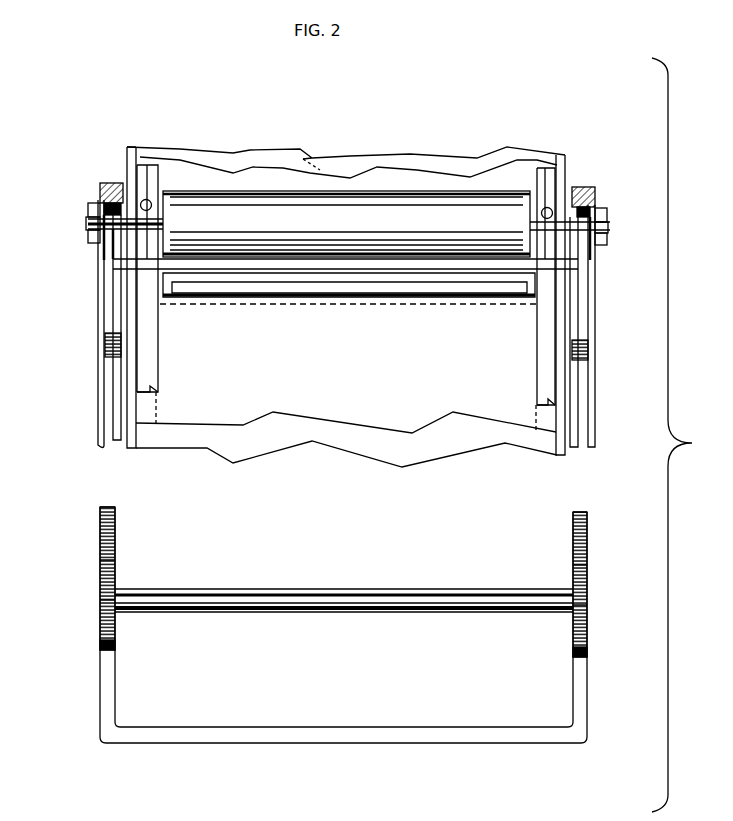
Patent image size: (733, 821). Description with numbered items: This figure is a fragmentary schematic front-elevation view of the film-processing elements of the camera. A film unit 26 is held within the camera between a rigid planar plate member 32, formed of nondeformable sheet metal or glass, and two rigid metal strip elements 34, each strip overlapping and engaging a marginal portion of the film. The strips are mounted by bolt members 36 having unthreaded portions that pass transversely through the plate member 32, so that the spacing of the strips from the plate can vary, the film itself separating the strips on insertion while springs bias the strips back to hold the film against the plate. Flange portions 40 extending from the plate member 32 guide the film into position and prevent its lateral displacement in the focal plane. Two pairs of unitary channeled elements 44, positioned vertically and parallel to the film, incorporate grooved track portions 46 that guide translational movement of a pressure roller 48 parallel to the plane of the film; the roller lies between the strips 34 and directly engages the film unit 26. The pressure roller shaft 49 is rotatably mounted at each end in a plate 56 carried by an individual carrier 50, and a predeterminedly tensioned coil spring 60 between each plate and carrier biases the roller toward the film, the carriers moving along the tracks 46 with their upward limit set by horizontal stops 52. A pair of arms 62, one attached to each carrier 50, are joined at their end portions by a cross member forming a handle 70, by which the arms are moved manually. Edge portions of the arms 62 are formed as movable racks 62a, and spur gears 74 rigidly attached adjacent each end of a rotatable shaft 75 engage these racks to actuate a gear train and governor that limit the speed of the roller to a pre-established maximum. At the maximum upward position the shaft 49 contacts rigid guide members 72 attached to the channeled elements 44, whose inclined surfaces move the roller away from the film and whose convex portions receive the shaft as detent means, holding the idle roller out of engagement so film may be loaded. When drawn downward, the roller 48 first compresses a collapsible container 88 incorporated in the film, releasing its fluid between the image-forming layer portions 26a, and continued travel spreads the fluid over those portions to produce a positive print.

The film unit 26 is at (311, 178).
The image-forming layer portions 26a is at (367, 369).
The rigid planar plate member 32 is at (264, 152).
The metal strip elements 34 is at (150, 352).
The bolt members 36 is at (146, 199).
The flange portions 40 is at (127, 412).
The channeled elements 44 is at (107, 372).
The grooved track portions 46 is at (100, 400).
The pressure roller 48 is at (425, 200).
The pressure roller shaft 49 is at (86, 222).
The carrier 50 is at (110, 240).
The horizontal stop 52 is at (113, 185).
The plate 56 is at (96, 236).
The coil spring 60 is at (610, 232).
The arms 62 is at (117, 316).
The movable racks 62a is at (114, 516).
The handle 70 is at (272, 727).
The guide member 72 is at (93, 207).
The spur gears 74 is at (100, 580).
The rotatable shaft 75 is at (305, 590).
The collapsible container 88 is at (283, 286).